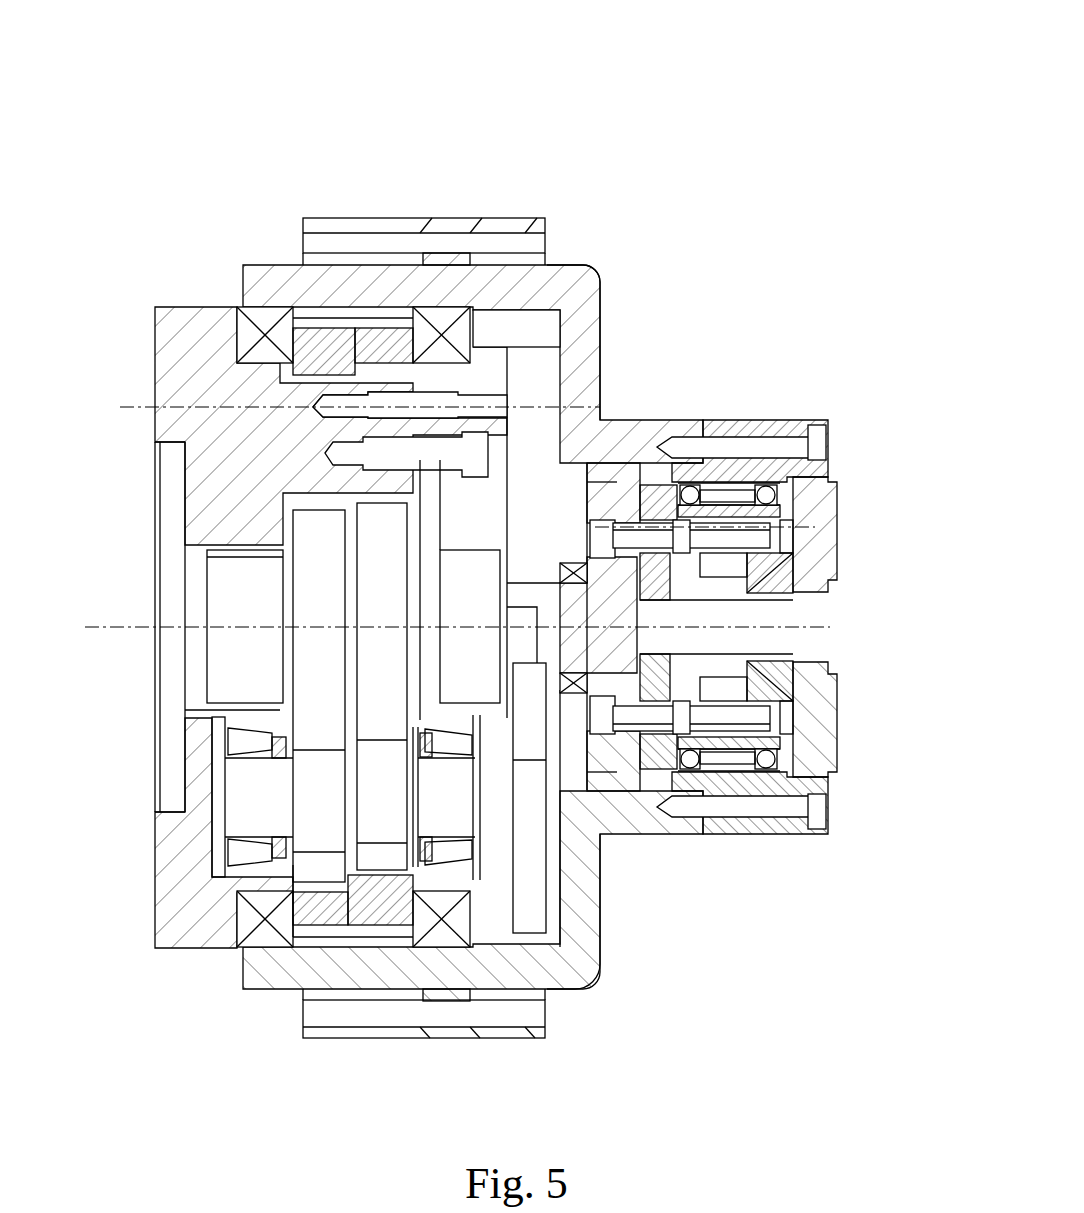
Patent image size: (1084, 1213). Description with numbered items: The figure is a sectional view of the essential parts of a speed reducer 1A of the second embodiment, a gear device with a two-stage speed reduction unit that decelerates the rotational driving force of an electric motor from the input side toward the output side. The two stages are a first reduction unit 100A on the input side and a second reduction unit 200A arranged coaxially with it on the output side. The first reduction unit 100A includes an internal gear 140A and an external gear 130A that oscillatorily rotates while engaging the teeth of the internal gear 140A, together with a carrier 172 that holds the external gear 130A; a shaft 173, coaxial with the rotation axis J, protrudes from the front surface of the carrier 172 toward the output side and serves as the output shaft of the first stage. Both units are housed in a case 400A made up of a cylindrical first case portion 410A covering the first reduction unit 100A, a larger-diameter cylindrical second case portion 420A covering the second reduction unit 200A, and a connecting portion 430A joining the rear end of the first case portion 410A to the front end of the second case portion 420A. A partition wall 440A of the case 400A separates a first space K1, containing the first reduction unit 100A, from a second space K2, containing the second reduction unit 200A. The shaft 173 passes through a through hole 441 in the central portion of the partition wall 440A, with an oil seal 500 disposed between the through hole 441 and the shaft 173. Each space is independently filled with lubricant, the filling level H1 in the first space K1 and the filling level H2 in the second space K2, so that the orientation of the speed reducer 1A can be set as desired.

The speed reducer 1A is at (823, 140).
The second case portion 420A is at (467, 222).
The second space K2 is at (523, 357).
The case 400A is at (583, 262).
The connecting portion 430A is at (603, 323).
The first case portion 410A is at (667, 420).
The carrier 172 is at (613, 503).
The stator 140A is at (726, 485).
The first reduction unit 100A is at (787, 475).
The first space K1 is at (792, 488).
The filling level H2 is at (128, 405).
The second reduction unit 200A is at (295, 493).
The partition wall 440A is at (560, 505).
The oil seal 500 is at (560, 573).
The filling level H1 is at (812, 526).
The motor shaft 130A is at (760, 578).
The rotation axis J is at (823, 630).
The through hole 441 is at (575, 587).
The shaft 173 is at (567, 833).